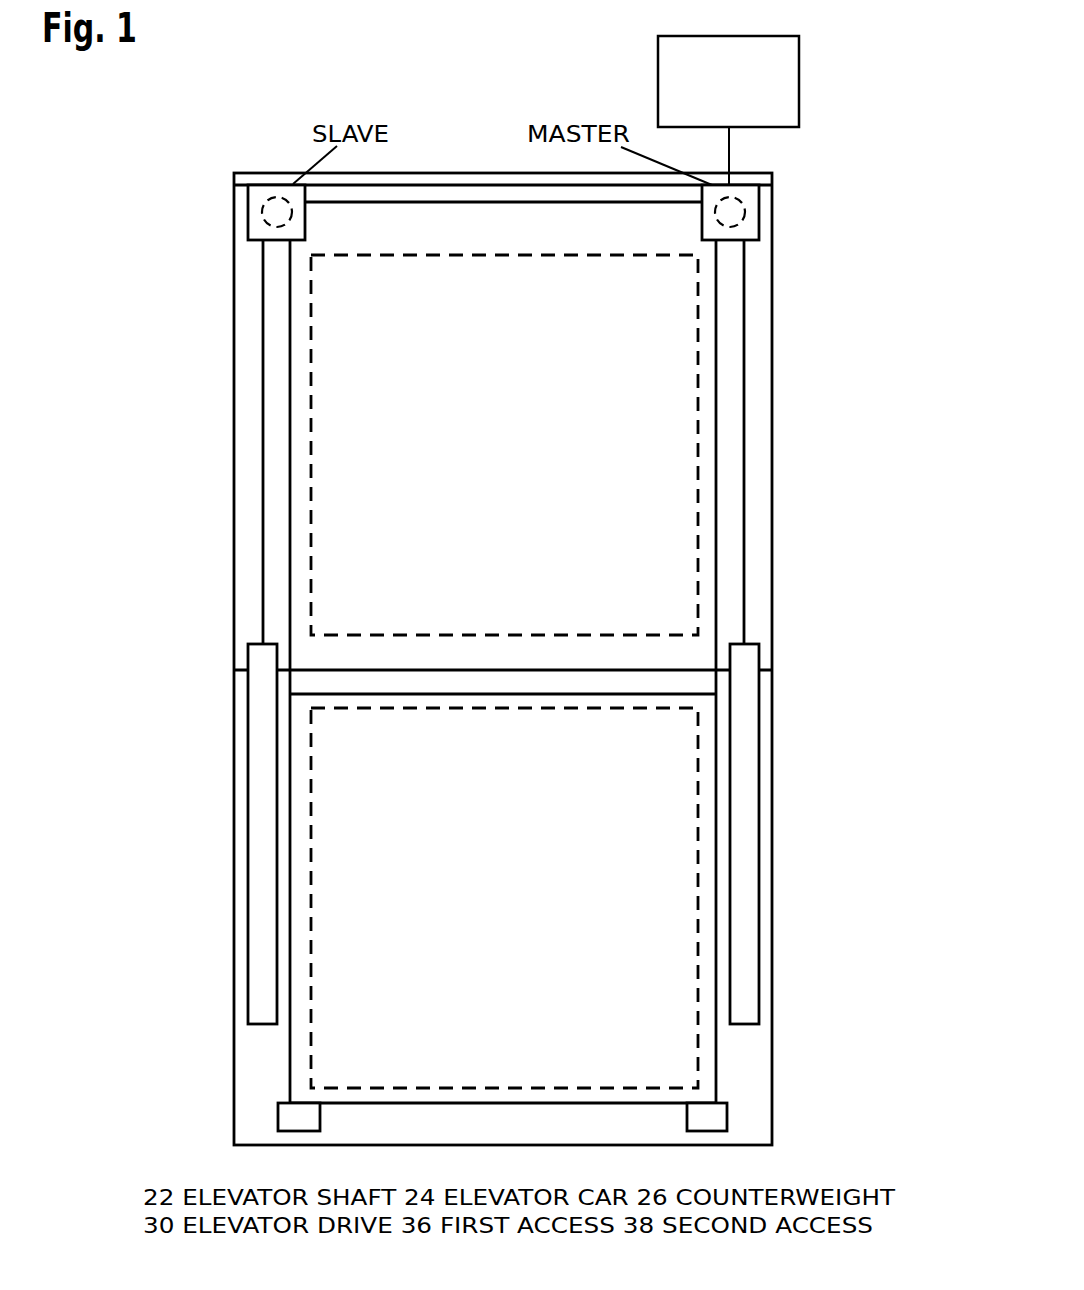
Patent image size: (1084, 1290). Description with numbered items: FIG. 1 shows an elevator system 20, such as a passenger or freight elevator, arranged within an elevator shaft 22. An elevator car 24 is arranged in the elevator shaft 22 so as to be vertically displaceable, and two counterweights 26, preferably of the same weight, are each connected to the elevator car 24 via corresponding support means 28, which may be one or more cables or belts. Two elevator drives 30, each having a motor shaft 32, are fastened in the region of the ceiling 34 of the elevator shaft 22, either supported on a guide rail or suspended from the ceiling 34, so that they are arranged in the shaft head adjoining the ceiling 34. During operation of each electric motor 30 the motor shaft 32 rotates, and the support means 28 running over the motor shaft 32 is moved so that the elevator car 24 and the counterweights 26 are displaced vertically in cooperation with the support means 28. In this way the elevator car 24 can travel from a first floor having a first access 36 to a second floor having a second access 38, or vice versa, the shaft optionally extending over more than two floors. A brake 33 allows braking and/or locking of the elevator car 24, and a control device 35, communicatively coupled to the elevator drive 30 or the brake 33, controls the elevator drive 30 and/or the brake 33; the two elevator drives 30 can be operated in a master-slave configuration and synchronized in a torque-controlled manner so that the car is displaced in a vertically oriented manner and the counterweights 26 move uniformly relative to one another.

The elevator system 20 is at (150, 138).
The elevator shaft 22 is at (787, 345).
The elevator car 24 is at (716, 1053).
The counterweights 26 is at (248, 833).
The support means 28 is at (262, 382).
The elevator drive 30 is at (248, 228).
The motor shaft 32 is at (266, 200).
The brake 33 is at (278, 1118).
The ceiling 34 is at (423, 185).
The control device 35 is at (728, 110).
The first access 36 is at (311, 931).
The second access 38 is at (311, 503).